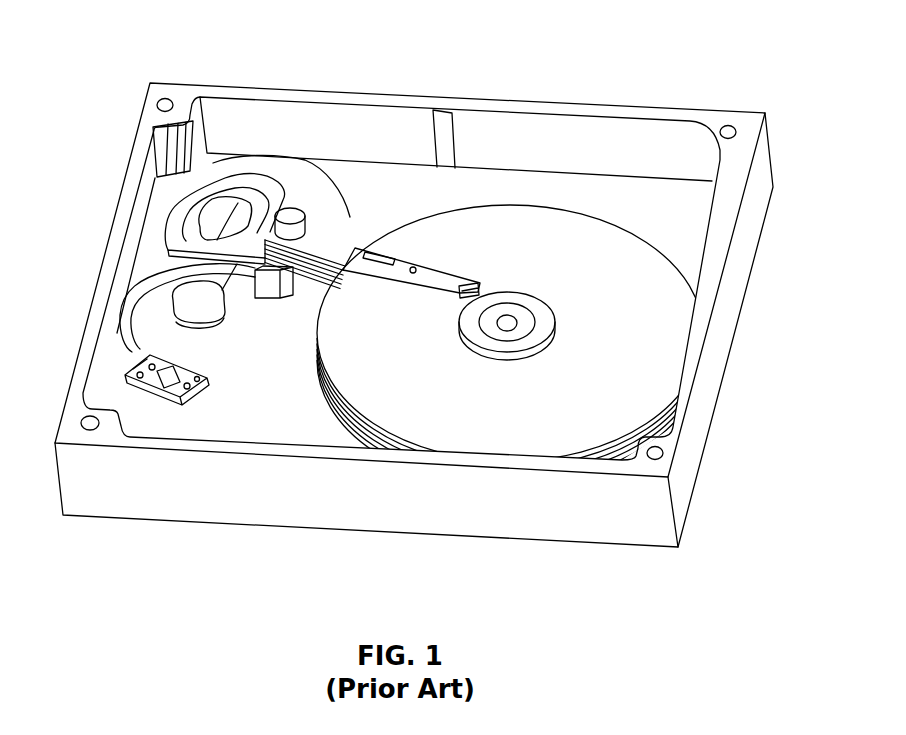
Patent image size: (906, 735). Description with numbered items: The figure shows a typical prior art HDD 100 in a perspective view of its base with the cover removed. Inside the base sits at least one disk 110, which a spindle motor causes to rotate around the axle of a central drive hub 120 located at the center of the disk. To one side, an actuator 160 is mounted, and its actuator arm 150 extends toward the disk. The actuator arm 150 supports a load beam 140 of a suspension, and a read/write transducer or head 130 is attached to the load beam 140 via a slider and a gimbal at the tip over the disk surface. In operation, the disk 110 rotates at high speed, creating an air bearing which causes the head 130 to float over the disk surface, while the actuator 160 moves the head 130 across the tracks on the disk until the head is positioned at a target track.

The HDD 100 is at (419, 305).
The disk 110 is at (510, 415).
The central drive hub 120 is at (542, 318).
The head 130 is at (473, 284).
The load beam 140 is at (423, 272).
The actuator arm 150 is at (320, 235).
The actuator 160 is at (284, 172).